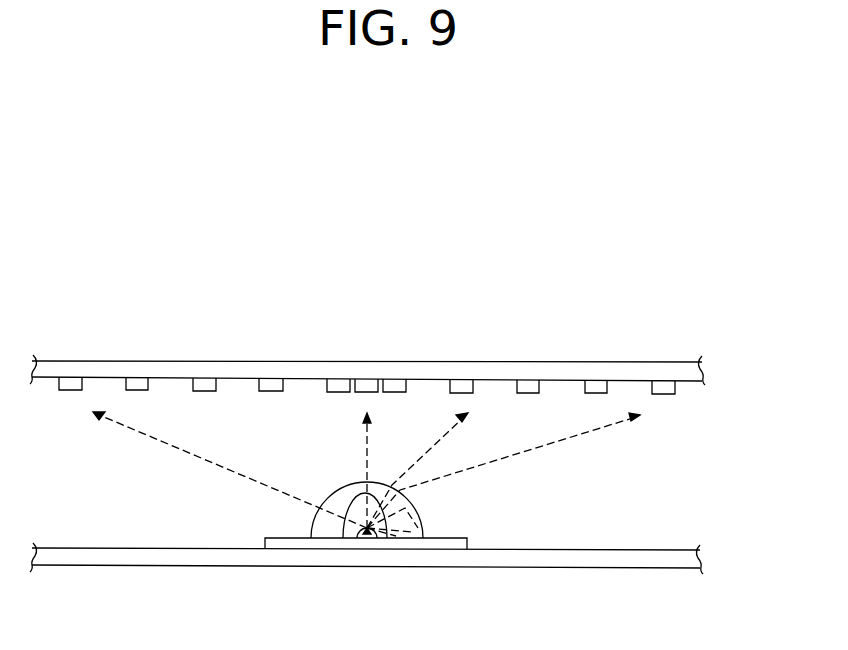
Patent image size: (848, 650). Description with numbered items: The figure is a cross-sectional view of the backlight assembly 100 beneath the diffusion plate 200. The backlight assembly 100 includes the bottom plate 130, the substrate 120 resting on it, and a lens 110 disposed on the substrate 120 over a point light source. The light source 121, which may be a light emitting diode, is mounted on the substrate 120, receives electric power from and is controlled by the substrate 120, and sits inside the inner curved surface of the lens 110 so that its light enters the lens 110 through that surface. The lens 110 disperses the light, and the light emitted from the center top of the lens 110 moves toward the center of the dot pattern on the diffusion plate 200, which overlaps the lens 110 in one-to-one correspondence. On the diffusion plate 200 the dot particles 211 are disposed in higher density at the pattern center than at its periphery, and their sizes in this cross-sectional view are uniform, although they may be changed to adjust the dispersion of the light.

The backlight assembly 100 is at (402, 519).
The lens 110 is at (427, 520).
The substrate 120 is at (416, 550).
The light source 121 is at (362, 540).
The bottom plate 130 is at (615, 558).
The diffusion plate 200 is at (686, 371).
The dot particles 211 is at (668, 394).